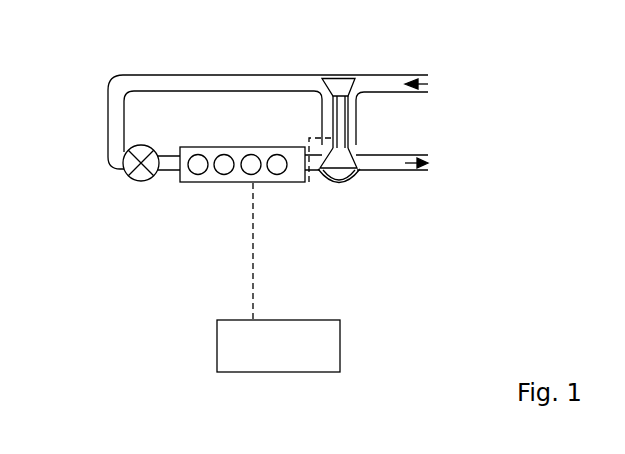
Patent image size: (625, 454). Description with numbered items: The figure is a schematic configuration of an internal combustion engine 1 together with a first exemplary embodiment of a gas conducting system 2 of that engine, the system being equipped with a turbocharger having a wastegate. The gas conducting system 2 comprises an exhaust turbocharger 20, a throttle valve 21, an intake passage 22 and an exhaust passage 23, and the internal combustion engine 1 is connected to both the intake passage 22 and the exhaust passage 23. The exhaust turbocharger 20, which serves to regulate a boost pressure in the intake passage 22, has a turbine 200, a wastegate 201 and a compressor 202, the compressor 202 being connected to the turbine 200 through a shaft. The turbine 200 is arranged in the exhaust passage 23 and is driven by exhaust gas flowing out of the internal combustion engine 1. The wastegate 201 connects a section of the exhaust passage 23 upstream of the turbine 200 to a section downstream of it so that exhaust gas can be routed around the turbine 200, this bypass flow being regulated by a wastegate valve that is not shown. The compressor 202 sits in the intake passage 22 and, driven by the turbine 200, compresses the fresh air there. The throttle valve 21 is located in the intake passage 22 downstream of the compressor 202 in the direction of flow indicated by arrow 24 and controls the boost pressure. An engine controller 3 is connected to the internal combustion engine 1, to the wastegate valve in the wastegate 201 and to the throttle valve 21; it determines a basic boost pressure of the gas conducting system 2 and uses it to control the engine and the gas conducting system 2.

The internal combustion engine 1 is at (237, 182).
The gas conducting system 2 is at (71, 77).
The engine controller 3 is at (282, 372).
The exhaust turbocharger 20 is at (322, 127).
The turbine 200 is at (356, 155).
The wastegate 201 is at (345, 181).
The compressor 202 is at (341, 77).
The throttle valve 21 is at (142, 182).
The intake passage 22 is at (392, 77).
The exhaust passage 23 is at (383, 171).
The arrow 24 is at (427, 78).